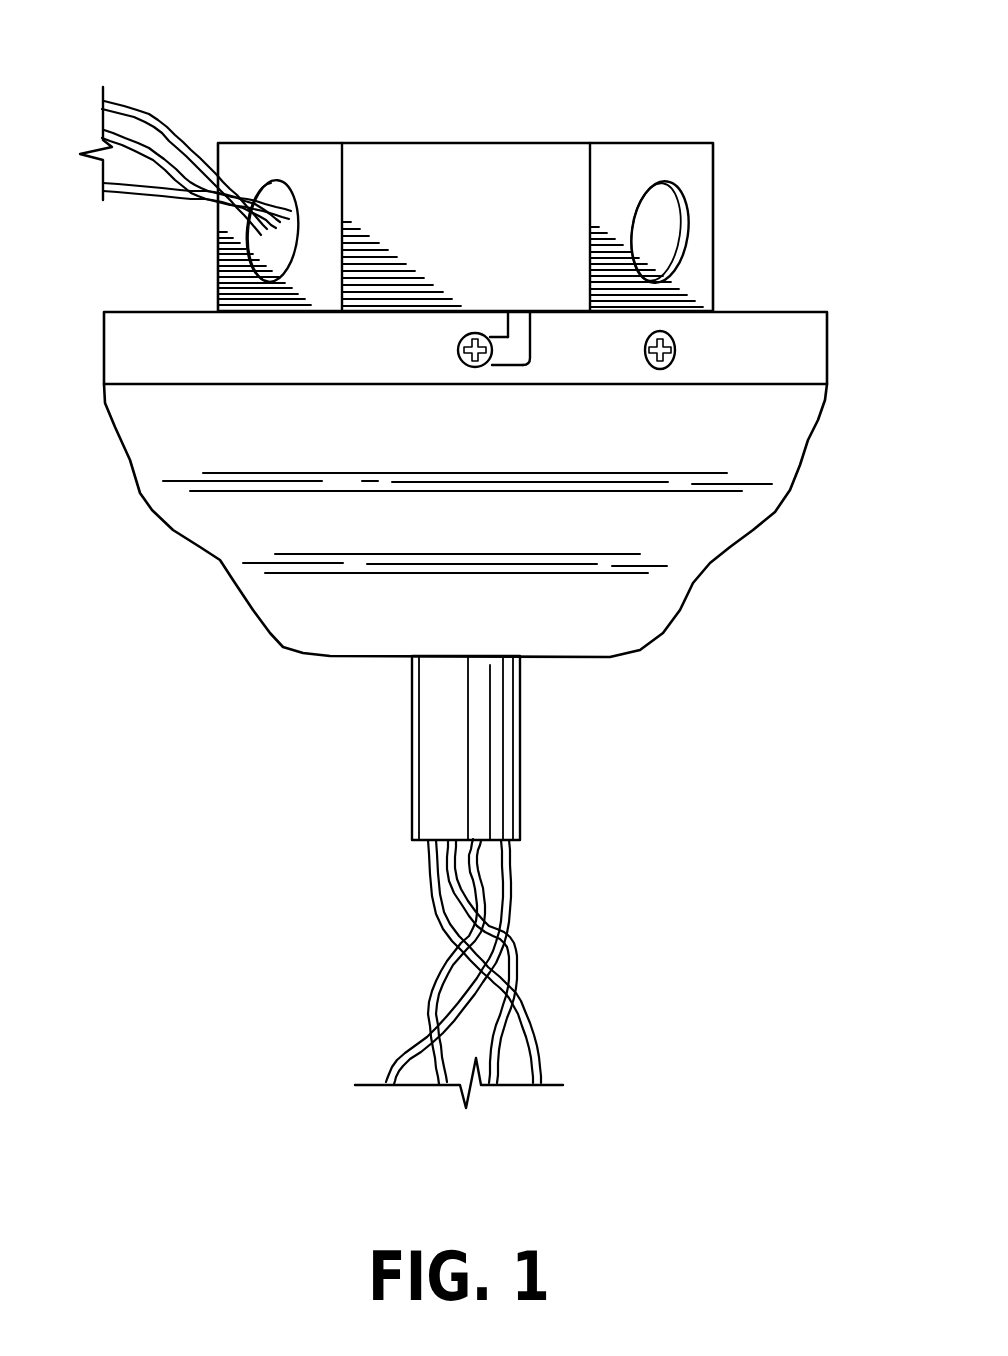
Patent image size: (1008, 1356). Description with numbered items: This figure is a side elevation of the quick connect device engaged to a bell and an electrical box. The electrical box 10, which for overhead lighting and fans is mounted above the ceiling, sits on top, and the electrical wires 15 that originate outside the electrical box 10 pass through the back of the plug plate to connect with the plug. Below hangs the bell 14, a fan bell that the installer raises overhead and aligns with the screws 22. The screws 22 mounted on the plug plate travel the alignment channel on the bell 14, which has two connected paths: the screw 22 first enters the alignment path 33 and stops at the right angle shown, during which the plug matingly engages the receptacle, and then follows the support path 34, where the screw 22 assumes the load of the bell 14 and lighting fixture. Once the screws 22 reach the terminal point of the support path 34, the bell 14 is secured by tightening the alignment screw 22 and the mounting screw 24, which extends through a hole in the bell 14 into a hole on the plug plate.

The electrical box 10 is at (688, 167).
The electrical wires 15 is at (168, 128).
The bell 14 is at (743, 442).
The screws 22 is at (458, 348).
The mounting screw 24 is at (673, 362).
The alignment path 33 is at (517, 325).
The support path 34 is at (503, 352).